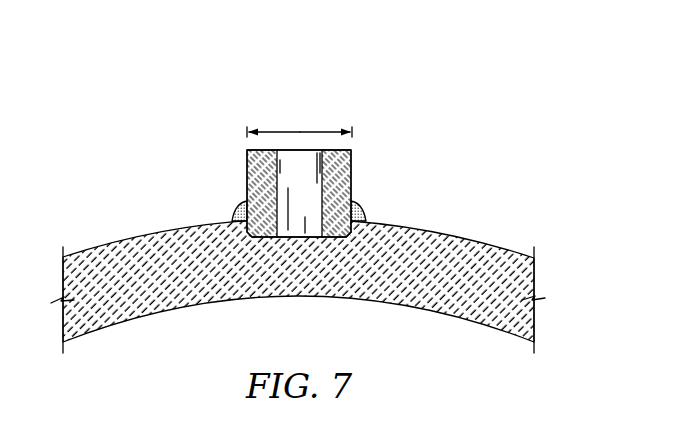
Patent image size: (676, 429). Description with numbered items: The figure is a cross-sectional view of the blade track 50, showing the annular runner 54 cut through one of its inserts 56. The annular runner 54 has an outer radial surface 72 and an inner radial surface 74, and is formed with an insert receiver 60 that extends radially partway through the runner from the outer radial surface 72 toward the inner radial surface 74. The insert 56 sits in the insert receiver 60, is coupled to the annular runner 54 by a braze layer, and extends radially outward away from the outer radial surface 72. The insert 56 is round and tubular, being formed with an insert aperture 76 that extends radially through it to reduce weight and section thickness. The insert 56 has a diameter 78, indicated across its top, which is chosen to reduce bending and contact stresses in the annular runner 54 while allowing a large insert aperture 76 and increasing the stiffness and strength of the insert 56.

The blade track 50 is at (373, 82).
The annular runner 54 is at (473, 240).
The insert 56 is at (247, 183).
The insert receiver 60 is at (345, 230).
The outer radial surface 72 is at (93, 252).
The inner radial surface 74 is at (133, 320).
The insert aperture 76 is at (301, 208).
The diameter 78 is at (313, 130).